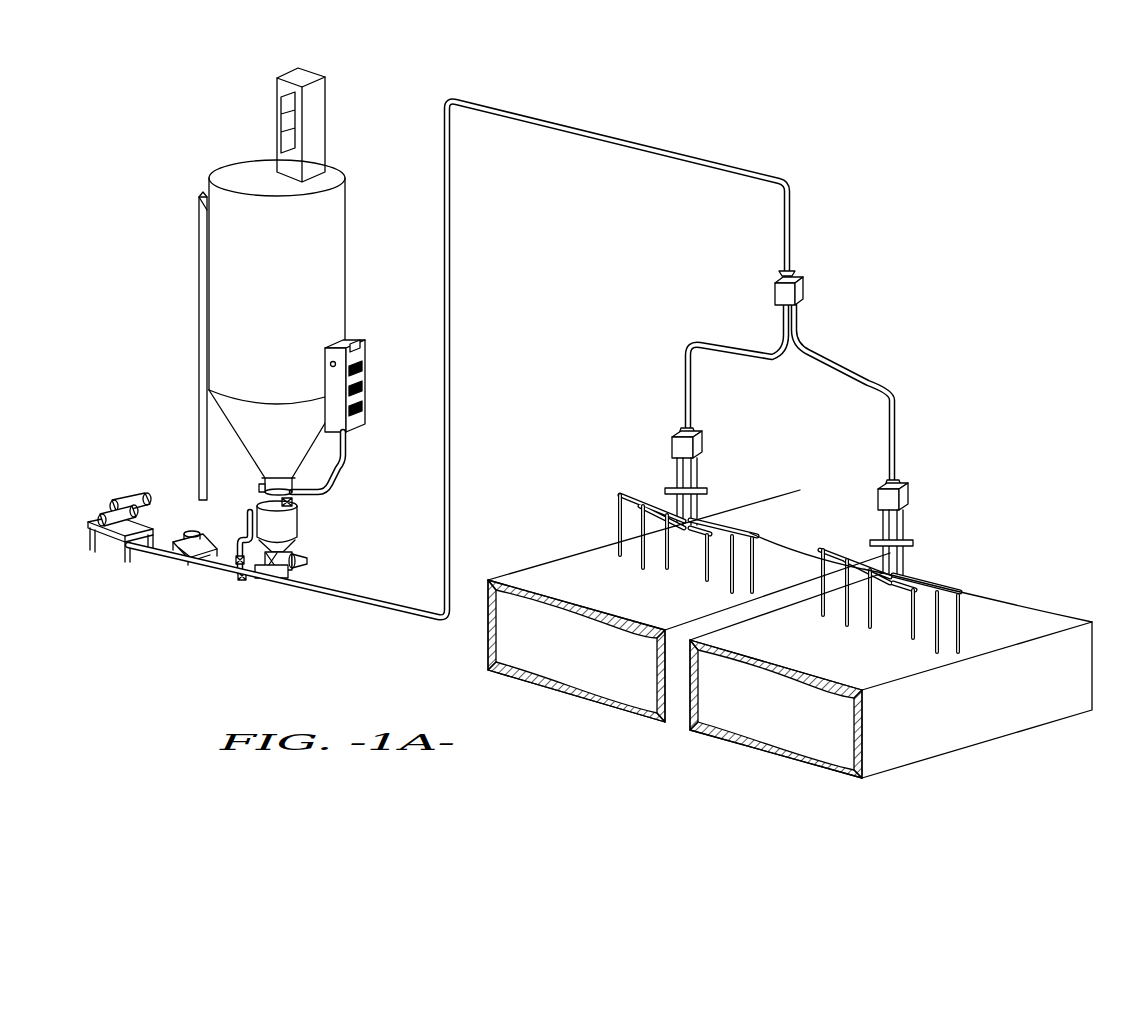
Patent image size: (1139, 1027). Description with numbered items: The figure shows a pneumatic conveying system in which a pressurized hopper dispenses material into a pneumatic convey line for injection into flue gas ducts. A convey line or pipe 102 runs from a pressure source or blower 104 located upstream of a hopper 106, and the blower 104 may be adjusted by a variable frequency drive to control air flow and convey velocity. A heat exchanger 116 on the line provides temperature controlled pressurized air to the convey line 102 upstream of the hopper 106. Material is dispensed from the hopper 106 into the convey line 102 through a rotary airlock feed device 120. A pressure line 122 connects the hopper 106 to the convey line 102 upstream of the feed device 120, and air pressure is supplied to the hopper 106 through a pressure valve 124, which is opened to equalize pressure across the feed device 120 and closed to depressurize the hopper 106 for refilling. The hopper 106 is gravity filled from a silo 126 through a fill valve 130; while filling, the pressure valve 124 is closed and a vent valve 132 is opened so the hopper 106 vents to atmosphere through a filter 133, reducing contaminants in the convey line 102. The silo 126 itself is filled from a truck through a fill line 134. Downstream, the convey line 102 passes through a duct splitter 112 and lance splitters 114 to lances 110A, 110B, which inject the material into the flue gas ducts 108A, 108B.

The convey line 102 is at (347, 590).
The blower 104 is at (122, 503).
The hopper 106 is at (240, 534).
The flue gas duct 108A is at (578, 562).
The flue gas duct 108B is at (1013, 607).
The lance 110A is at (725, 517).
The lance 110B is at (912, 573).
The duct splitter 112 is at (805, 292).
The lance splitter 114 is at (670, 444).
The heat exchanger 116 is at (186, 568).
The feed device 120 is at (292, 593).
The pressure line 122 is at (248, 540).
The pressure valve 124 is at (243, 578).
The silo 126 is at (330, 250).
The fill valve 130 is at (262, 480).
The vent valve 132 is at (293, 500).
The filter 133 is at (366, 358).
The fill line 134 is at (194, 257).